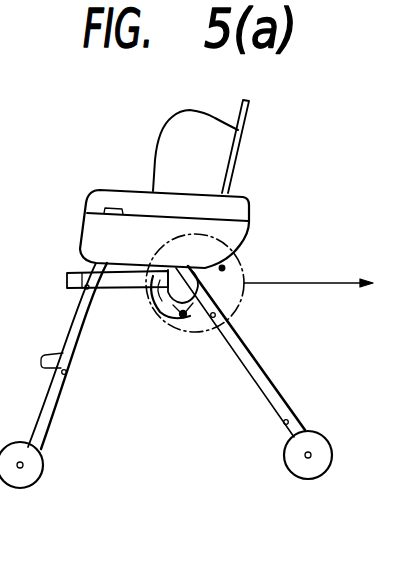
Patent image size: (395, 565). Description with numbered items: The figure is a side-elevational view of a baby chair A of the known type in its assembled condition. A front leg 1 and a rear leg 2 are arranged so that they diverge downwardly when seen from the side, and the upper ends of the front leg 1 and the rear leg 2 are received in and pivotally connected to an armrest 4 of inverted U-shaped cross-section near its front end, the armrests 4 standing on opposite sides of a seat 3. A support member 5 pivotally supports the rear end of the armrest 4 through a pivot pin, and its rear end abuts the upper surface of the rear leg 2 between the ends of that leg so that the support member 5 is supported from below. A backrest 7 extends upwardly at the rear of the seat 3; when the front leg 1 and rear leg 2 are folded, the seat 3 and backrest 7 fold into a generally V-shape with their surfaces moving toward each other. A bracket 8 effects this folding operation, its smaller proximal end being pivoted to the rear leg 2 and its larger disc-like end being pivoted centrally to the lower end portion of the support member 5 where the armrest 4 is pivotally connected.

The baby chair A is at (79, 185).
The front leg 1 is at (55, 405).
The rear leg 2 is at (252, 378).
The seat 3 is at (120, 289).
The armrest 4 is at (128, 196).
The support member 5 is at (208, 273).
The backrest 7 is at (212, 163).
The bracket 8 is at (174, 318).